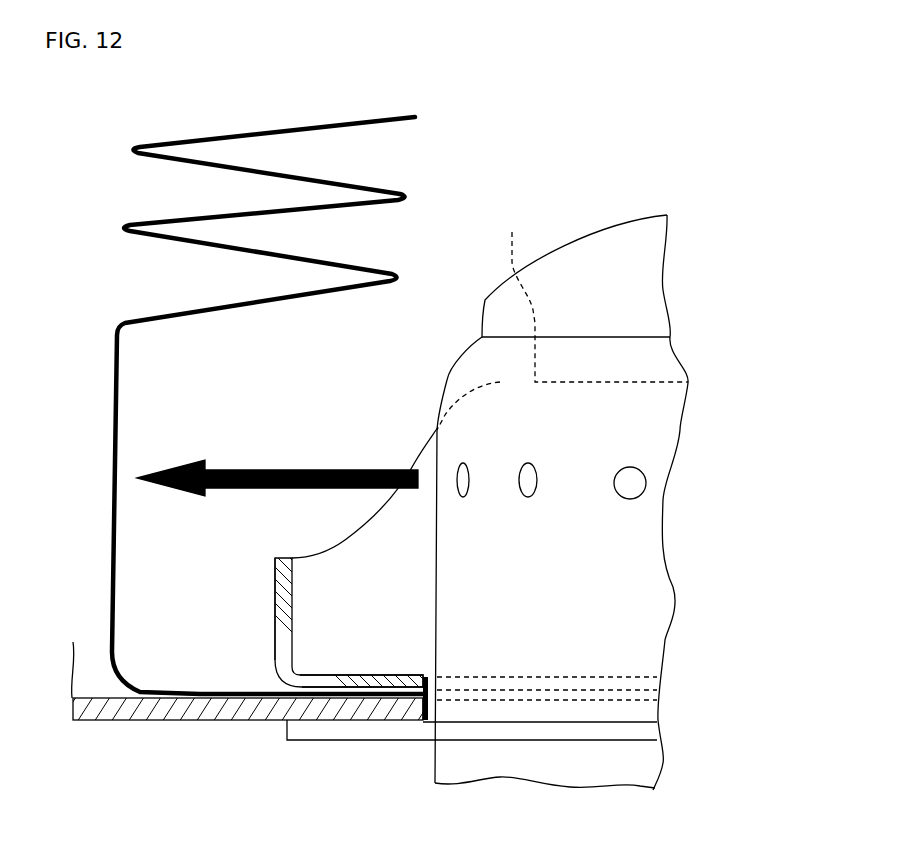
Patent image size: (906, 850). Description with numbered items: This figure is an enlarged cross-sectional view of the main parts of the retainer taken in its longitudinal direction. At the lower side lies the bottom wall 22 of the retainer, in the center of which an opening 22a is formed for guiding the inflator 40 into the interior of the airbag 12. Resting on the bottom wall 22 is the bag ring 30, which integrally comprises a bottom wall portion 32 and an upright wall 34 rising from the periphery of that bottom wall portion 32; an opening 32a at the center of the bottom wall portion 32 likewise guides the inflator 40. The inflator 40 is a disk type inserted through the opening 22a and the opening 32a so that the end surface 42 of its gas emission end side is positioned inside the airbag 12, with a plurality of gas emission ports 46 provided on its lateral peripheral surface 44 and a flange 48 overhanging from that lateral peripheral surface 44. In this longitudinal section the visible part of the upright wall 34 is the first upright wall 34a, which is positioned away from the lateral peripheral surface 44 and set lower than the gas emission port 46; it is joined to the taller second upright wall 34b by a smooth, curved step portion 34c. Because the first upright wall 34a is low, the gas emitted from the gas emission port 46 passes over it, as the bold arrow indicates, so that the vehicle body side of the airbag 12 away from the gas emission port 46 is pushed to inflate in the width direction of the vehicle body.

The airbag 12 is at (110, 293).
The bottom wall 22 is at (120, 717).
The opening 22a is at (432, 715).
The bag ring 30 is at (396, 453).
The bottom wall portion 32 is at (363, 675).
The opening 32a is at (432, 683).
The upright wall 34 is at (426, 463).
The first upright wall 34a is at (275, 597).
The second upright wall 34b is at (562, 318).
The step portion 34c is at (431, 437).
The inflator 40 is at (595, 457).
The end surface 42 is at (630, 215).
The lateral peripheral surface 44 is at (660, 612).
The gas emission port 46 is at (646, 483).
The flange 48 is at (343, 740).